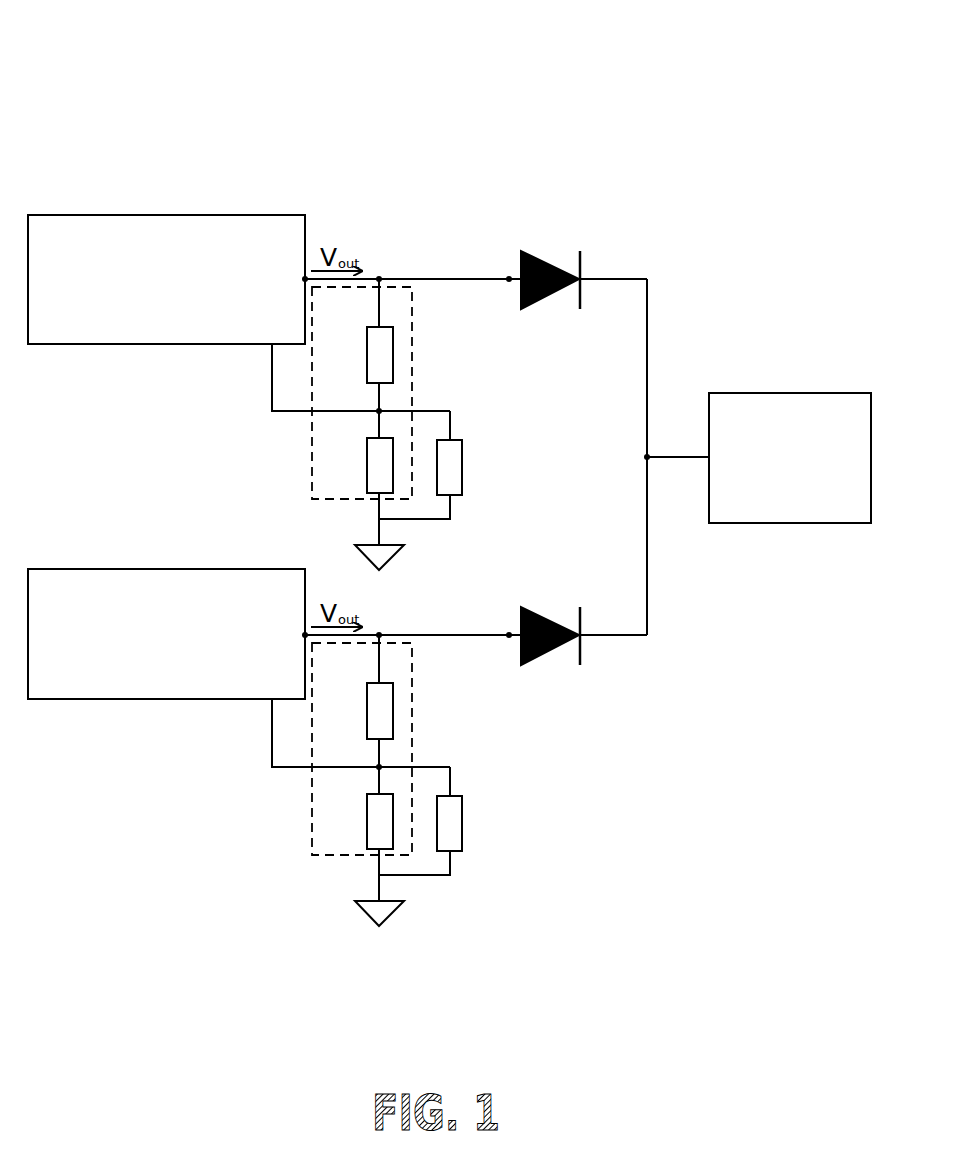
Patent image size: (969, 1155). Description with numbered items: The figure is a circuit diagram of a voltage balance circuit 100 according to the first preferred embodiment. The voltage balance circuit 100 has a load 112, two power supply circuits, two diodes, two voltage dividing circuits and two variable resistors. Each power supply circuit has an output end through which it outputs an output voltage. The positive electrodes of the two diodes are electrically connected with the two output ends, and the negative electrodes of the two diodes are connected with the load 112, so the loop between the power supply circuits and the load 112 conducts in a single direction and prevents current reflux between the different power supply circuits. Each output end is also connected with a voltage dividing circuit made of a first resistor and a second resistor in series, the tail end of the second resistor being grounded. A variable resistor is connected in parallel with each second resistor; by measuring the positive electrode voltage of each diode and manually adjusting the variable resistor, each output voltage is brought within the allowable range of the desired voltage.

The voltage balance circuit 100 is at (137, 33).
The load 112 is at (826, 523).